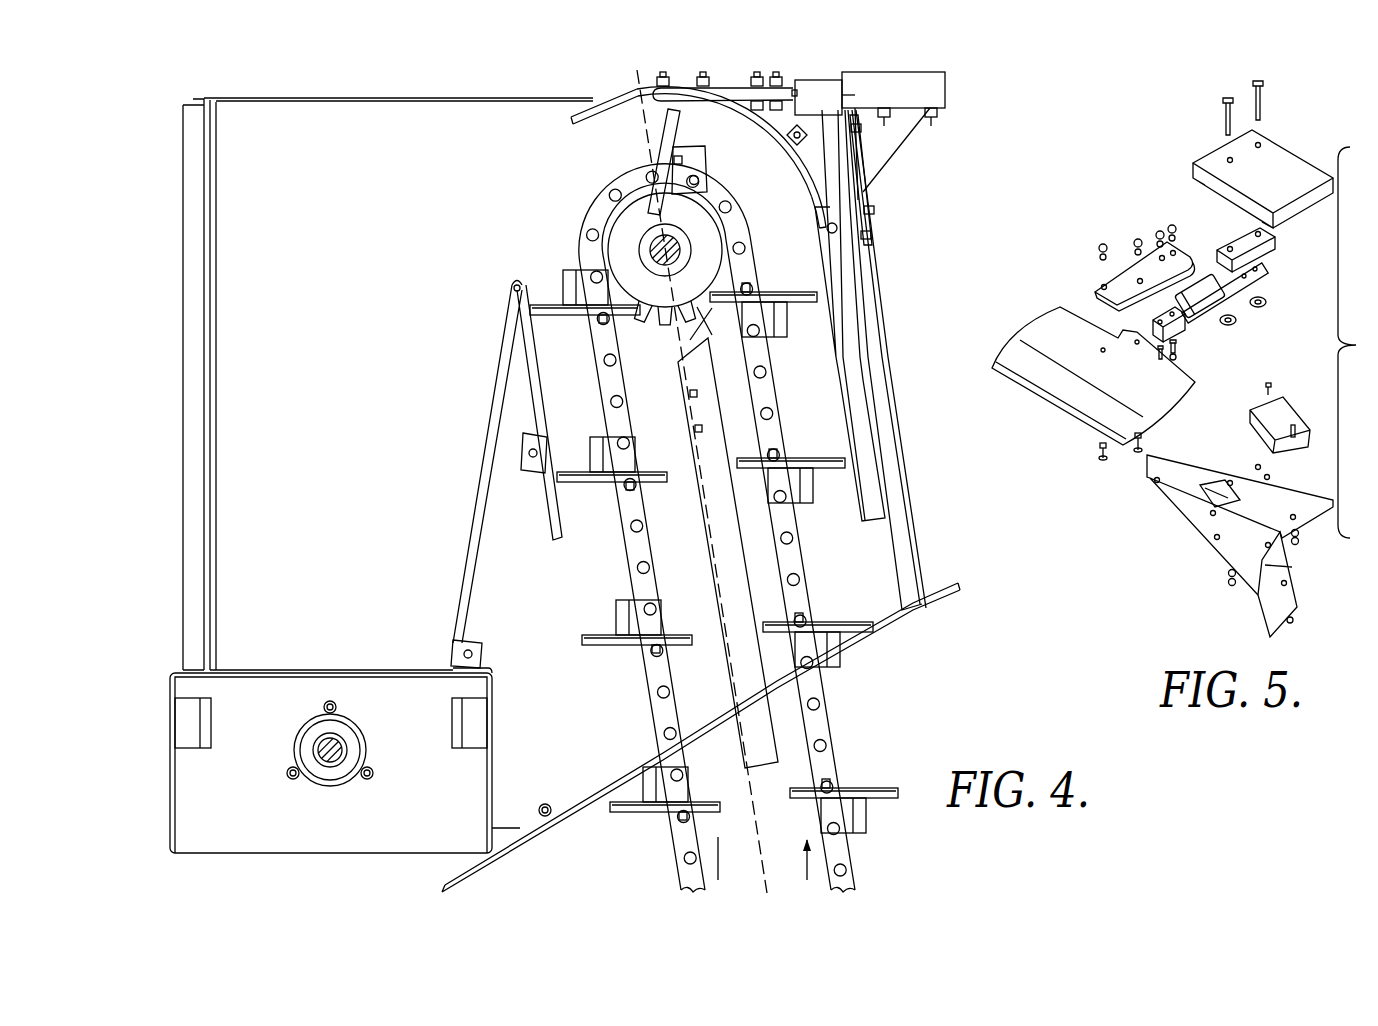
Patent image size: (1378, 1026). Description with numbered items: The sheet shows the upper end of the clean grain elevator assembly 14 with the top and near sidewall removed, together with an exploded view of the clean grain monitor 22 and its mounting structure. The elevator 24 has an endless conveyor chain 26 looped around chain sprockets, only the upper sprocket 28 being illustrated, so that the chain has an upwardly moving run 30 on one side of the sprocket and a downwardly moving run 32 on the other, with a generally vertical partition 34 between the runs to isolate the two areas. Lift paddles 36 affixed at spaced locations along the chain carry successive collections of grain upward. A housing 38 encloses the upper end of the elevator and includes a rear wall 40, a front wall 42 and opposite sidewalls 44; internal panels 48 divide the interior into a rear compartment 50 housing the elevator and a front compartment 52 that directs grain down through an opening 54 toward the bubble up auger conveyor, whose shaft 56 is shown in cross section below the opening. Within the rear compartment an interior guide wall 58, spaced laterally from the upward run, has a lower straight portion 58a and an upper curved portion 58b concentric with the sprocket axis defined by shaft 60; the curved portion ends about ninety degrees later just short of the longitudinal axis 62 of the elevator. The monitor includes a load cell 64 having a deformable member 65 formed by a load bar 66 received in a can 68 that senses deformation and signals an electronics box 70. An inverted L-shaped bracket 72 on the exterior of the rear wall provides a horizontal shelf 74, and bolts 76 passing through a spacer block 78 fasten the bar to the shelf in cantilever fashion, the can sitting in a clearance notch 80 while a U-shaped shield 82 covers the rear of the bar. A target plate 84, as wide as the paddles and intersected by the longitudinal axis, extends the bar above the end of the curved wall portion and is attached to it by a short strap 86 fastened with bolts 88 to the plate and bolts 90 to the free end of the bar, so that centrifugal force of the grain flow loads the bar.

In FIG. 4, the elevator assembly 14 is at (883, 360).
In FIG. 4, the monitor 22 is at (840, 146).
In FIG. 5, the monitor 22 is at (1167, 348).
In FIG. 4, the elevator 24 is at (633, 216).
In FIG. 4, the conveyor chain 26 is at (731, 528).
In FIG. 4, the upper sprocket 28 is at (698, 218).
In FIG. 4, the upwardly moving run 30 is at (793, 563).
In FIG. 4, the downwardly moving run 32 is at (637, 549).
In FIG. 4, the partition 34 is at (730, 592).
In FIG. 4, the lift paddles 36 is at (878, 798).
In FIG. 4, the housing 38 is at (369, 363).
In FIG. 4, the rear wall 40 is at (874, 298).
In FIG. 4, the front wall 42 is at (208, 262).
In FIG. 4, the sidewall 44 is at (432, 115).
In FIG. 4, the internal panels 48 is at (525, 398).
In FIG. 4, the rear compartment 50 is at (824, 315).
In FIG. 4, the front compartment 52 is at (331, 385).
In FIG. 4, the opening 54 is at (345, 736).
In FIG. 4, the shaft 56 is at (318, 738).
In FIG. 4, the interior guide wall 58 is at (840, 348).
In FIG. 4, the lower straight portion 58a is at (847, 414).
In FIG. 4, the upper curved portion 58b is at (800, 180).
In FIG. 4, the shaft 60 is at (662, 251).
In FIG. 4, the longitudinal axis 62 is at (637, 118).
In FIG. 4, the load cell 64 is at (812, 82).
In FIG. 5, the load cell 64 is at (1208, 280).
In FIG. 4, the load member 65 is at (740, 108).
In FIG. 5, the load member 65 is at (1246, 310).
In FIG. 4, the load bar 66 is at (800, 103).
In FIG. 5, the load bar 66 is at (1263, 276).
In FIG. 4, the can 68 is at (822, 110).
In FIG. 5, the can 68 is at (1197, 312).
In FIG. 5, the box 70 is at (1288, 408).
In FIG. 4, the L-shaped bracket 72 is at (872, 190).
In FIG. 5, the L-shaped bracket 72 is at (1218, 562).
In FIG. 4, the shelf 74 is at (915, 120).
In FIG. 5, the shelf 74 is at (1242, 546).
In FIG. 4, the bolts 76 is at (898, 101).
In FIG. 5, the bolts 76 is at (1252, 88).
In FIG. 5, the spacer block 78 is at (1240, 245).
In FIG. 5, the clearance notch 80 is at (1198, 508).
In FIG. 4, the shield 82 is at (945, 92).
In FIG. 5, the shield 82 is at (1272, 157).
In FIG. 4, the target plate 84 is at (686, 151).
In FIG. 5, the target plate 84 is at (1062, 395).
In FIG. 4, the strap 86 is at (716, 78).
In FIG. 5, the strap 86 is at (1100, 286).
In FIG. 4, the bolts 88 is at (680, 78).
In FIG. 5, the bolts 88 is at (1137, 452).
In FIG. 4, the bolts 90 is at (776, 79).
In FIG. 5, the bolts 90 is at (1178, 350).